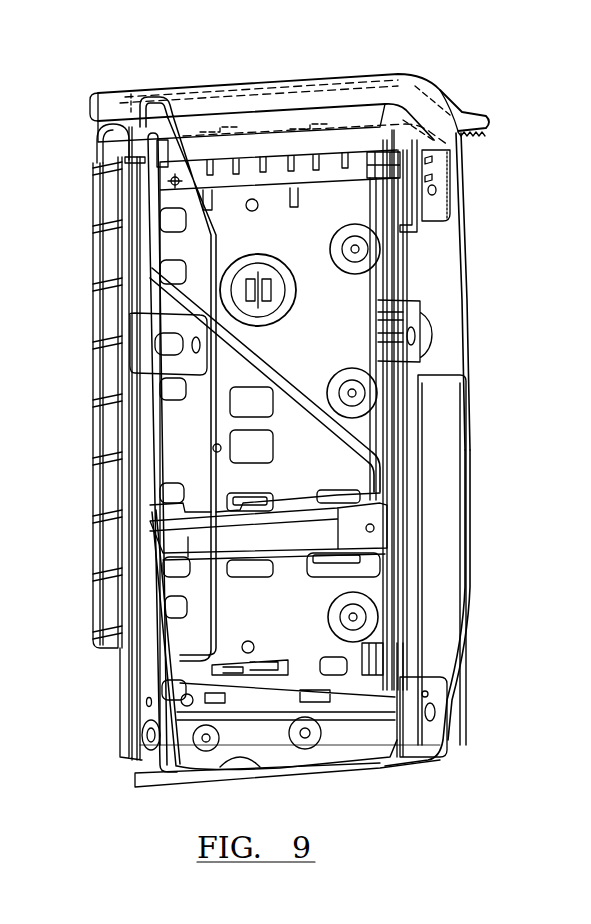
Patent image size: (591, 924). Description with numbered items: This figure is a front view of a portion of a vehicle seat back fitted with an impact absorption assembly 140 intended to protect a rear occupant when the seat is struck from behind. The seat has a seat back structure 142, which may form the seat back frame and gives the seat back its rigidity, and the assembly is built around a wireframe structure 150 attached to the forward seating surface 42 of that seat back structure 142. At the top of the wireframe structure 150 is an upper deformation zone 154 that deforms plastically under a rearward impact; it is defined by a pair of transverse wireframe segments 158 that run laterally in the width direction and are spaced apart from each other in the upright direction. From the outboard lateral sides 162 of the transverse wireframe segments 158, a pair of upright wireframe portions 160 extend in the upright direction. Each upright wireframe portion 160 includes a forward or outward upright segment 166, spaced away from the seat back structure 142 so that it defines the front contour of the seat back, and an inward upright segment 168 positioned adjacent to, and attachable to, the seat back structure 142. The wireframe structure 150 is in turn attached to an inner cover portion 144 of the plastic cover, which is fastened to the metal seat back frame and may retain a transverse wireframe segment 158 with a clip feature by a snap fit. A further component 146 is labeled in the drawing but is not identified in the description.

The forward seating surface 42 is at (167, 650).
The impact absorption assembly 140 is at (478, 443).
The seat back structure 142 is at (123, 515).
The inner cover portion 144 is at (120, 117).
The back panel 146 is at (120, 400).
The wireframe structure 150 is at (465, 613).
The upper deformation zone 154 is at (140, 110).
The transverse wireframe segments 158 is at (357, 120).
The upright wireframe portions 160 is at (140, 332).
The outboard lateral sides 162 is at (127, 147).
The outward upright segment 166 is at (203, 247).
The inward upright segment 168 is at (157, 243).